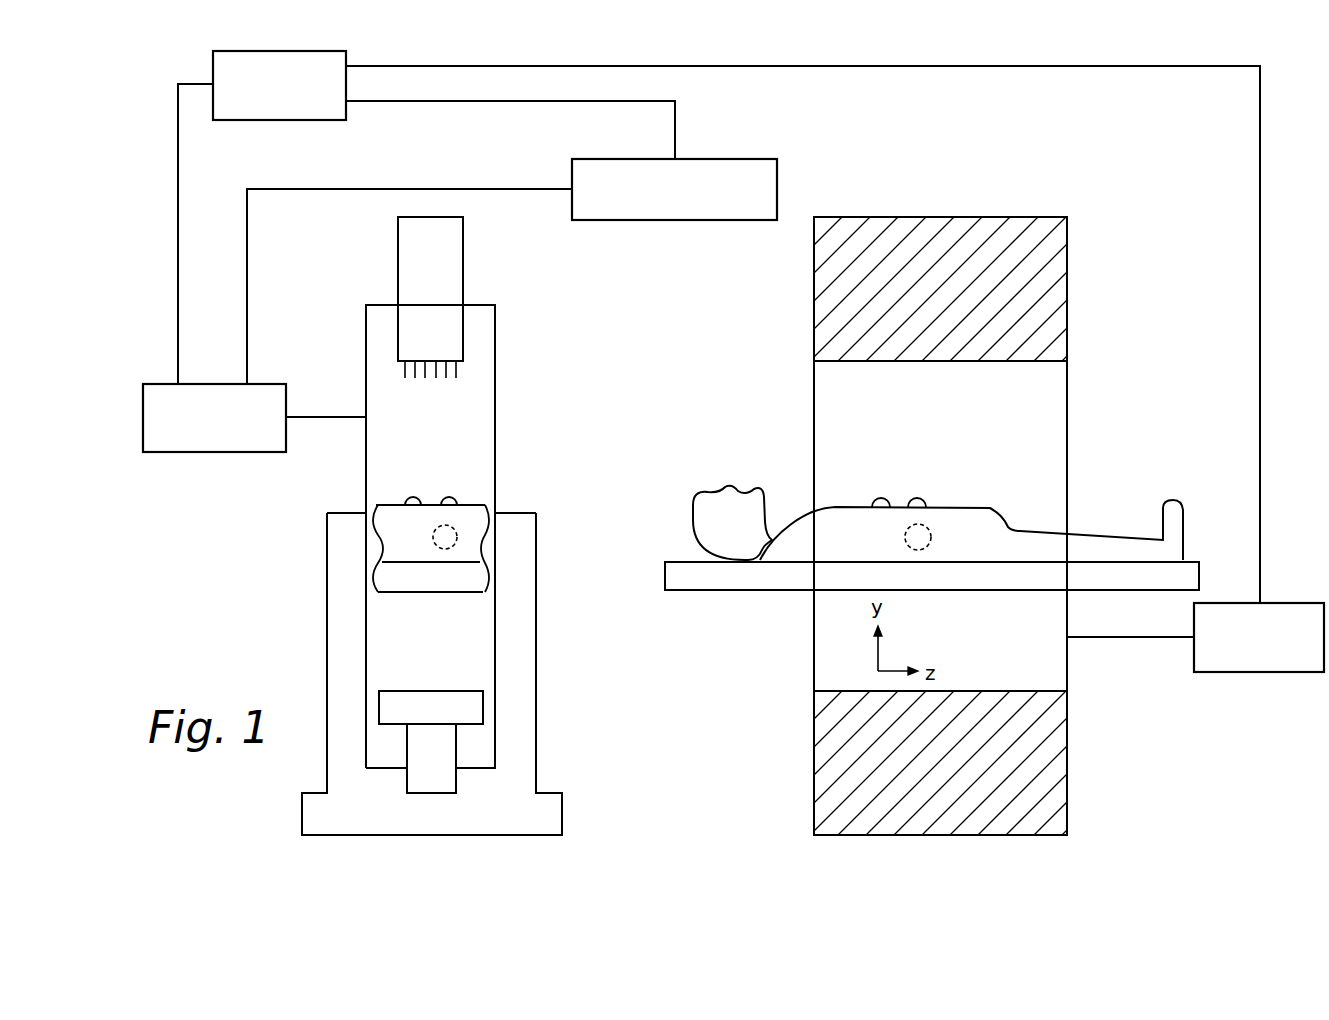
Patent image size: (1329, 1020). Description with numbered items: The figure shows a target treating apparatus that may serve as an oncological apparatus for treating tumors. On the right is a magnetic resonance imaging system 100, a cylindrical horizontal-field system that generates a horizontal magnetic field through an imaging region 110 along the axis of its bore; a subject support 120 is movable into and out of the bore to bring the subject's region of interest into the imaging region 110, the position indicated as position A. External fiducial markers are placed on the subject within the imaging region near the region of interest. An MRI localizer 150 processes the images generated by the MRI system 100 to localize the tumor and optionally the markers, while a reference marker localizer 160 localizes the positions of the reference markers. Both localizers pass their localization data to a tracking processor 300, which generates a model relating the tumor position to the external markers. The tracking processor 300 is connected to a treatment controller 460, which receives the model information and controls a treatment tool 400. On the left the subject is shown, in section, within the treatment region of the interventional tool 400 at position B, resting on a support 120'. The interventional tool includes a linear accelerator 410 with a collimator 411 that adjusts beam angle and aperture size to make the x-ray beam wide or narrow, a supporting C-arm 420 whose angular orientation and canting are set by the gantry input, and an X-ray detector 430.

The magnetic resonance imaging system 100 is at (1068, 285).
The imaging region 110 is at (1020, 408).
The subject support 120 is at (961, 547).
The treatment table / support 120' is at (518, 605).
The MRI localizer 150 is at (1255, 673).
The reference marker localizer 160 is at (777, 189).
The tracking processor 300 is at (285, 121).
The treatment tool 400 is at (327, 585).
The linear accelerator 410 is at (398, 262).
The collimator 411 is at (457, 372).
The supporting C-arm 420 is at (495, 412).
The X-ray detector 430 is at (483, 707).
The treatment controller 460 is at (210, 453).